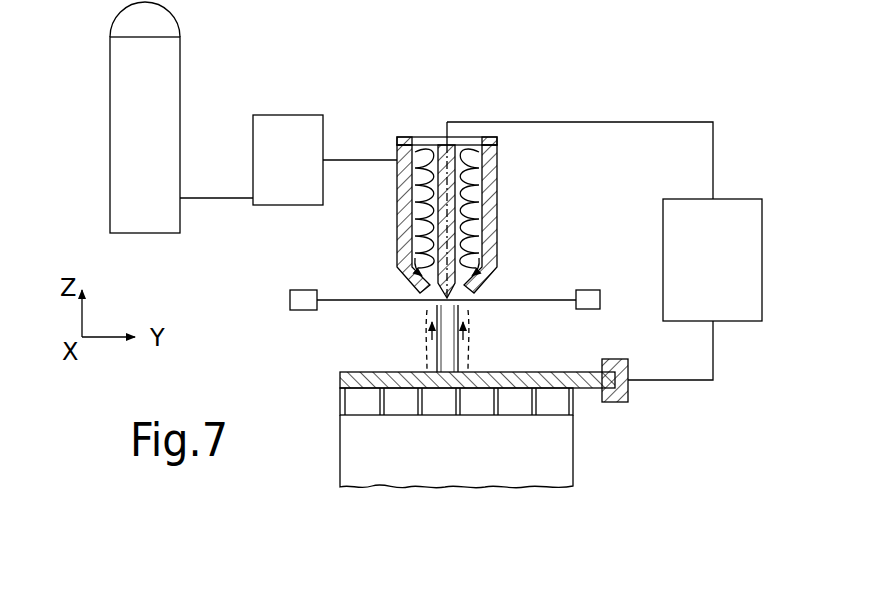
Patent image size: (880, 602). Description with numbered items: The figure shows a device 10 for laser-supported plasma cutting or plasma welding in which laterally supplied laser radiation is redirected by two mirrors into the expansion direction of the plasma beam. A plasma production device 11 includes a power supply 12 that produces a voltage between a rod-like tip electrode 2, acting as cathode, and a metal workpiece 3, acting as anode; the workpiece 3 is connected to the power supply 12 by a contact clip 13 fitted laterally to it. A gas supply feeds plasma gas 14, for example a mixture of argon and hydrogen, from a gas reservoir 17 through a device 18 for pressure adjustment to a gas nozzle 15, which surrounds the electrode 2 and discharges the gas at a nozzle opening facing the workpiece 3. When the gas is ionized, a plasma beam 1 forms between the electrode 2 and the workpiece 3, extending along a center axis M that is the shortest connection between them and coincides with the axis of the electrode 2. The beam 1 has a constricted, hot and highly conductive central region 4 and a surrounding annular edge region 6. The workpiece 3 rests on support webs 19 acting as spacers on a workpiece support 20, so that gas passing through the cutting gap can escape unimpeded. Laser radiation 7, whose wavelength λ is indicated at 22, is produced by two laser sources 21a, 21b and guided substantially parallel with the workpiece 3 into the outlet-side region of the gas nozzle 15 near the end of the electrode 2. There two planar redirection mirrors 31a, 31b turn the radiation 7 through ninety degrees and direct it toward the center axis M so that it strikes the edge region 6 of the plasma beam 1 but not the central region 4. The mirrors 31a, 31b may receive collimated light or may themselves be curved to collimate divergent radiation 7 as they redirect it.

The plasma beam 1 is at (482, 315).
The tip electrode 2 is at (440, 218).
The workpiece 3 is at (590, 392).
The central region 4 is at (432, 350).
The edge region 6 is at (425, 341).
The laser radiation 7 is at (348, 301).
The device 10 is at (686, 87).
The plasma production device 11 is at (572, 112).
The power supply 12 is at (745, 254).
The contact clip 13 is at (614, 396).
The plasma gas 14 is at (480, 218).
The gas nozzle 15 is at (490, 164).
The gas reservoir 17 is at (168, 70).
The device for pressure adjustment 18 is at (287, 127).
The support webs 19 is at (340, 402).
The workpiece support 20 is at (372, 452).
The laser source 21a is at (303, 290).
The laser source 21b is at (587, 290).
The laser wavelength 22 is at (262, 289).
The redirection mirror 31a is at (437, 300).
The redirection mirror 31b is at (457, 300).
The center axis M is at (440, 181).